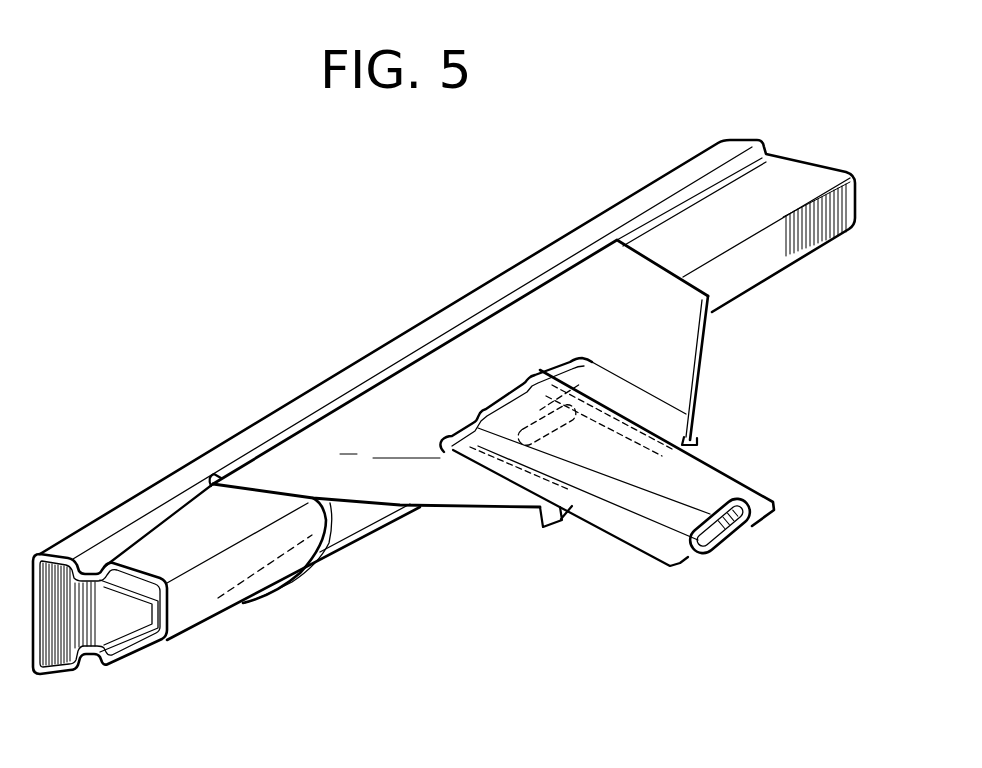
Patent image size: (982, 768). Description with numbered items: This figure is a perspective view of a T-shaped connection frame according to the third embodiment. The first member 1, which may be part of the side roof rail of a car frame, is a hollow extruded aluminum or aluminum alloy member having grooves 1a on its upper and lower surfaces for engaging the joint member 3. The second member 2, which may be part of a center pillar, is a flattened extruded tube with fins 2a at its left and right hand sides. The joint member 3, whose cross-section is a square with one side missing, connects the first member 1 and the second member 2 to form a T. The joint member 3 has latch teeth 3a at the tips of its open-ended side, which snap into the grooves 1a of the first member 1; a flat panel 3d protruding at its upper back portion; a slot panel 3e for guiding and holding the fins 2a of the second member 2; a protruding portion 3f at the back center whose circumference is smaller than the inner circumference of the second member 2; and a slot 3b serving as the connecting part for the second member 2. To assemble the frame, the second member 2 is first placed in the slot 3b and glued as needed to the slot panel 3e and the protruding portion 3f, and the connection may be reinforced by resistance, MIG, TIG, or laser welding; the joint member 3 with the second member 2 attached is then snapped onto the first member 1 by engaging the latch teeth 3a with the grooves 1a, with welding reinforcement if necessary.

The first member 1 is at (378, 362).
The grooves 1a is at (157, 517).
The second member 2 is at (733, 545).
The fins 2a is at (752, 490).
The joint member 3 is at (570, 285).
The latch teeth 3a is at (212, 480).
The slot 3b is at (583, 455).
The flat panel 3d is at (697, 360).
The slot panel 3e is at (694, 442).
The protruding portion 3f is at (512, 393).